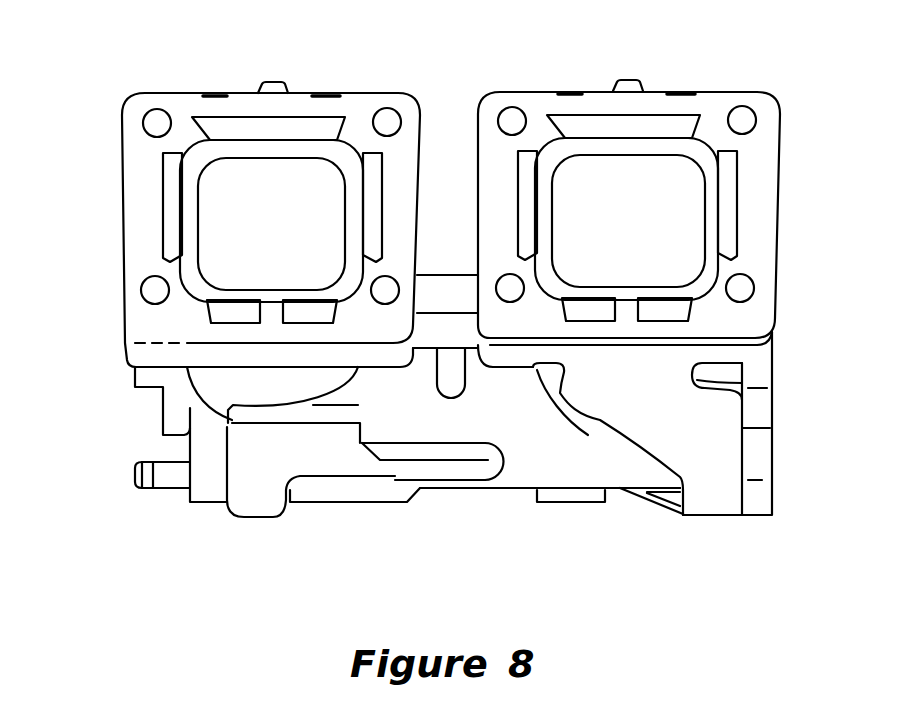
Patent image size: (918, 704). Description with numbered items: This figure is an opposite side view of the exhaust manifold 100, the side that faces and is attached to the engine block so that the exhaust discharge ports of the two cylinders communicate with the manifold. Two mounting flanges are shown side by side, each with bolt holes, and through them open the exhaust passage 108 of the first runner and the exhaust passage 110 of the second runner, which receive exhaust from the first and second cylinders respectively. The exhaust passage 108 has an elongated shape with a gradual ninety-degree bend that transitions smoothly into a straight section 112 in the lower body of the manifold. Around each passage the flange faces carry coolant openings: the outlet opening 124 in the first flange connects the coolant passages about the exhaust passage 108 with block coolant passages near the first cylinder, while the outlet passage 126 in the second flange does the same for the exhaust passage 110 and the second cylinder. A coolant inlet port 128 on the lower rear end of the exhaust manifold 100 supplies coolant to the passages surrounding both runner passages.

The exhaust manifold 100 is at (777, 407).
The exhaust passage 108 is at (223, 220).
The exhaust passage 110 is at (658, 205).
The straight section 112 is at (519, 428).
The outlet opening 124 is at (233, 127).
The outlet passage 126 is at (593, 123).
The coolant inlet port 128 is at (172, 475).